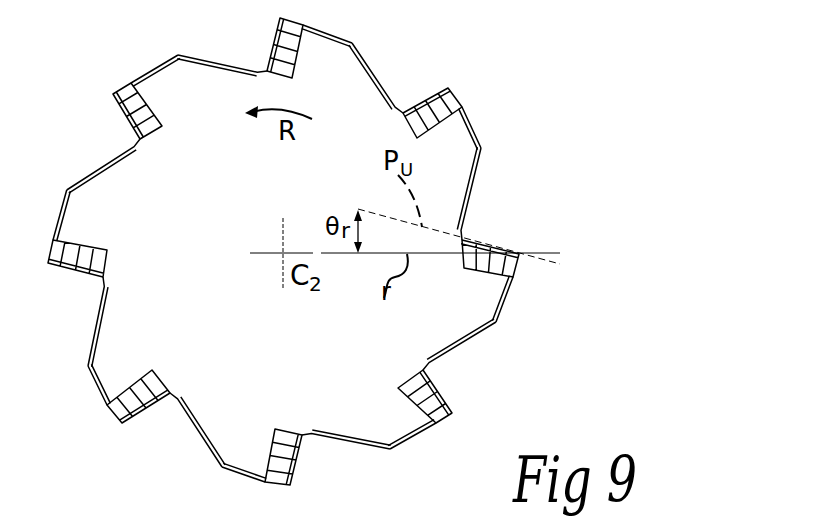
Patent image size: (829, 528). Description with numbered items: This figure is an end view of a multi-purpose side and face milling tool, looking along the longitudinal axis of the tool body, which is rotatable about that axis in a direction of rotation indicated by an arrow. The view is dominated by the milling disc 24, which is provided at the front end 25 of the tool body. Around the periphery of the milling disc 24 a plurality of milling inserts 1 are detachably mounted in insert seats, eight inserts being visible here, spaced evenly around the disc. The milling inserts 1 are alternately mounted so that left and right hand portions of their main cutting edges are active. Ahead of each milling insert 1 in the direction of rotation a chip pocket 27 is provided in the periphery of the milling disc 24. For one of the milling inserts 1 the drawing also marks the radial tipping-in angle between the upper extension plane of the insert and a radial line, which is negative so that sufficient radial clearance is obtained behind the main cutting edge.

The milling insert 1 is at (301, 242).
The milling disc 24 is at (452, 168).
The front end 25 is at (448, 318).
The chip pocket 27 is at (372, 68).